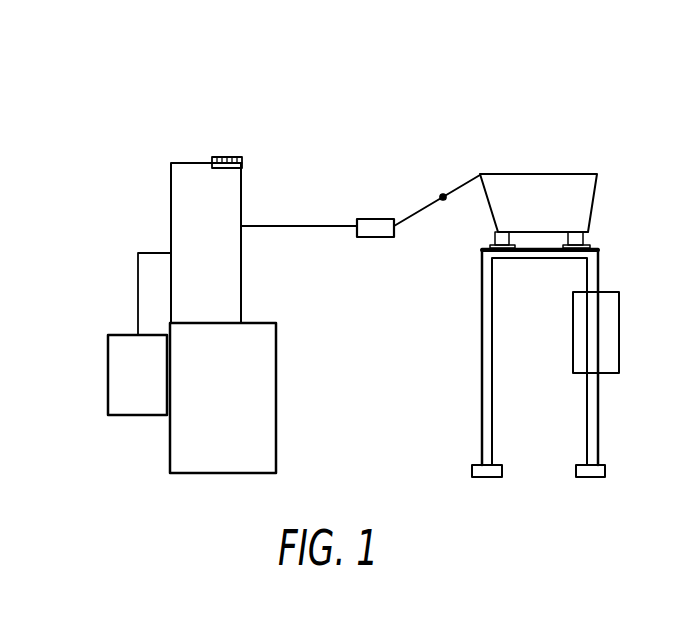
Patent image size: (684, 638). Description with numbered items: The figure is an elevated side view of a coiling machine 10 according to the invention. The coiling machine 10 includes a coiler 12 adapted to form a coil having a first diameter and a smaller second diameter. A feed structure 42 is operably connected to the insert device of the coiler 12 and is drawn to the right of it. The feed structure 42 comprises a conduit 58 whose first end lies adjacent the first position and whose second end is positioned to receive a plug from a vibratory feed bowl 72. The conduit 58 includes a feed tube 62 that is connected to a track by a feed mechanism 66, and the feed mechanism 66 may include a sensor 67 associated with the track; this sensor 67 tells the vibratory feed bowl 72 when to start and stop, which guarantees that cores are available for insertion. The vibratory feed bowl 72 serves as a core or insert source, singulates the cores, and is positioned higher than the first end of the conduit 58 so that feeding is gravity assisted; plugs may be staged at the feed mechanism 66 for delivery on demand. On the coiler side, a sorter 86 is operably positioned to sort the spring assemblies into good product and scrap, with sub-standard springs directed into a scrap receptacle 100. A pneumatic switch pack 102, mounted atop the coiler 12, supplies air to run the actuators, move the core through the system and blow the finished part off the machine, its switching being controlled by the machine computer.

The coiling machine 10 is at (230, 85).
The coiler 12 is at (160, 154).
The feed structure 42 is at (482, 136).
The conduit 58 is at (376, 262).
The feed tube 62 is at (268, 228).
The feed mechanism 66 is at (372, 218).
The sensor 67 is at (444, 200).
The vibratory feed bowl 72 is at (595, 208).
The sorter 86 is at (143, 281).
The scrap receptacle 100 is at (123, 403).
The pneumatic switch pack 102 is at (243, 159).